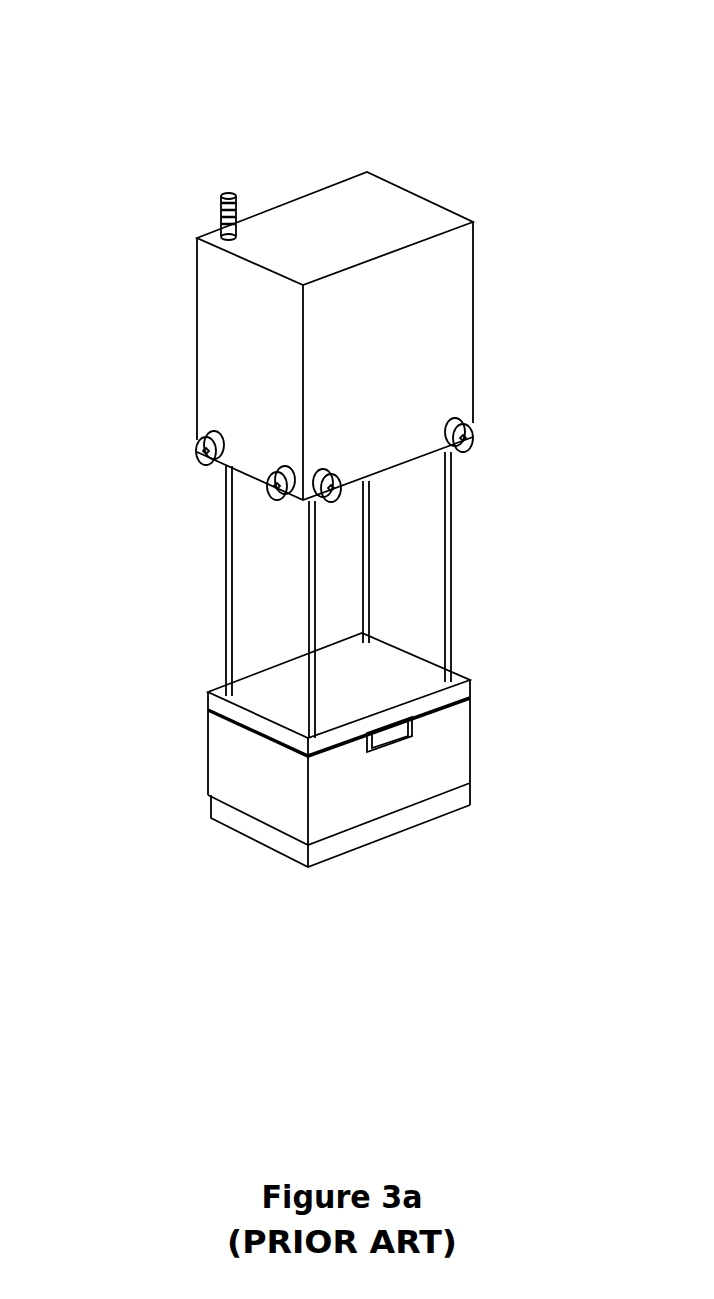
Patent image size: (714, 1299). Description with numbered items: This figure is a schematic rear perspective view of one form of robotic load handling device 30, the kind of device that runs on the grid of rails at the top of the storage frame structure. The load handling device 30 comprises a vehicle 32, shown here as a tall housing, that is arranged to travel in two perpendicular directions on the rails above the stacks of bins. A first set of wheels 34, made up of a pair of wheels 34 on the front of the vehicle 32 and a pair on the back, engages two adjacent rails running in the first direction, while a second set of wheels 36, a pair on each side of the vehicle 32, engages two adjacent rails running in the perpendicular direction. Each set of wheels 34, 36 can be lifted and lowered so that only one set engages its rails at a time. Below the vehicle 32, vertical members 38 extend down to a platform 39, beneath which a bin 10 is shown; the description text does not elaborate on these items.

The robotic load handling device 30 is at (153, 123).
The vehicle 32 is at (408, 313).
The first set of wheels 34 is at (470, 440).
The second set of wheels 36 is at (207, 438).
The guide rod 38 is at (448, 567).
The platform 39 is at (410, 680).
The container 10 is at (440, 770).